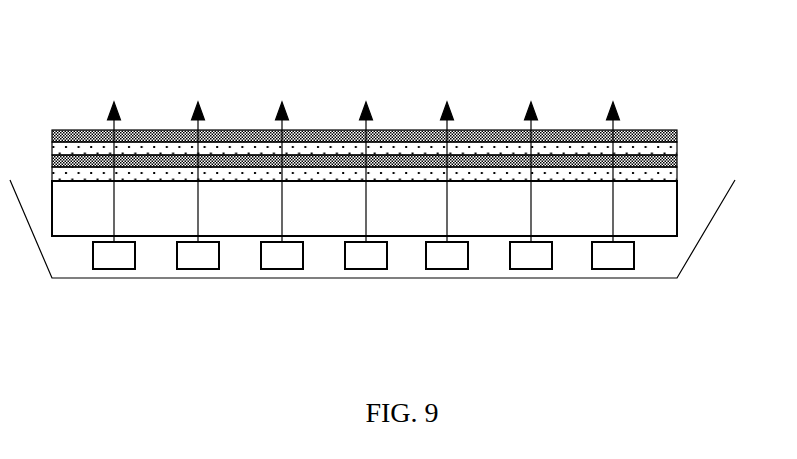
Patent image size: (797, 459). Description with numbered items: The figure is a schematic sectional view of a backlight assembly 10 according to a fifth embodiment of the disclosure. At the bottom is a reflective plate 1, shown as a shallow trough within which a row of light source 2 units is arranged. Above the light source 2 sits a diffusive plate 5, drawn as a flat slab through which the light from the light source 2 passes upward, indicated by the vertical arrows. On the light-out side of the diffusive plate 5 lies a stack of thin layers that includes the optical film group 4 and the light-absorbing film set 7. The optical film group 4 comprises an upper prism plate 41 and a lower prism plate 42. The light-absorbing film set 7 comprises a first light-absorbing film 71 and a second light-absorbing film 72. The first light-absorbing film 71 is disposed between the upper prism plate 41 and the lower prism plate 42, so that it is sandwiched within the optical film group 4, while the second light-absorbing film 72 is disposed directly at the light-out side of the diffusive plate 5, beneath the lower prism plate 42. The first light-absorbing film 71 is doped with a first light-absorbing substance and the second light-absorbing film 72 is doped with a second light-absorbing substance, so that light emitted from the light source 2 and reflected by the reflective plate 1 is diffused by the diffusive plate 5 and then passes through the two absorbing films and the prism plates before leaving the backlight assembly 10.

The backlight assembly 10 is at (63, 107).
The reflective plate 1 is at (693, 249).
The light source 2 is at (528, 258).
The diffusive plate 5 is at (658, 208).
The optical film group 4 is at (385, 120).
The upper prism plate 41 is at (383, 136).
The lower prism plate 42 is at (488, 160).
The light-absorbing film set 7 is at (270, 52).
The first light-absorbing film 71 is at (237, 150).
The second light-absorbing film 72 is at (308, 175).